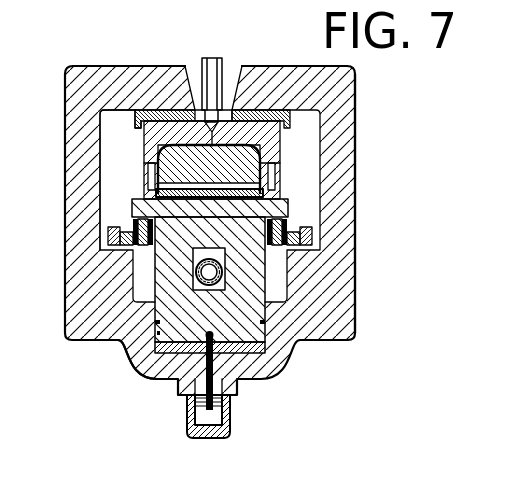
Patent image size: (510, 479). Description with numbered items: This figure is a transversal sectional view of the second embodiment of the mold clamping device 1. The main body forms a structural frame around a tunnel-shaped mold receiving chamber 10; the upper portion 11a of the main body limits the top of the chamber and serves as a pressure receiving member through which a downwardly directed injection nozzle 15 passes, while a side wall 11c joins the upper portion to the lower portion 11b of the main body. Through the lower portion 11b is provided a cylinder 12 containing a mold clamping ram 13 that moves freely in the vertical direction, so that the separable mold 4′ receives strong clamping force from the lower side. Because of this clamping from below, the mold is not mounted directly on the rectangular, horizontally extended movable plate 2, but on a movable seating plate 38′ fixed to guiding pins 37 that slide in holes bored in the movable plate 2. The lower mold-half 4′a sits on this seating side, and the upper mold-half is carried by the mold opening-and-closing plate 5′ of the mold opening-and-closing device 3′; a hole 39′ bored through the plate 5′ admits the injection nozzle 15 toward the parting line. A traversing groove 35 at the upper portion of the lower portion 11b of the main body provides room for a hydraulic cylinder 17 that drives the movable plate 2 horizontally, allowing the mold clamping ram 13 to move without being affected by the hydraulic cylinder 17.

The mold clamping device 1 is at (268, 385).
The movable plate 2 is at (308, 248).
The mold opening-and-closing device 3′ is at (127, 125).
The separable mold 4′ is at (283, 168).
The lower mold-half 4′a is at (150, 180).
The mold opening-and-closing plate 5′ is at (288, 121).
The mold receiving chamber 10 is at (110, 130).
The upper portion of the main body 11a is at (128, 70).
The lower portion of the main body 11b is at (138, 366).
The side wall 11c is at (342, 193).
The mold clamping cylinder 12 is at (175, 353).
The mold clamping ram 13 is at (172, 308).
The injection nozzle 15 is at (208, 80).
The hydraulic cylinder 17 is at (223, 272).
The traversing groove 35 is at (200, 253).
The guiding pin 37 is at (114, 233).
The movable seating plate 38′ is at (177, 222).
The hole for inserting injection nozzle 39′ is at (227, 110).